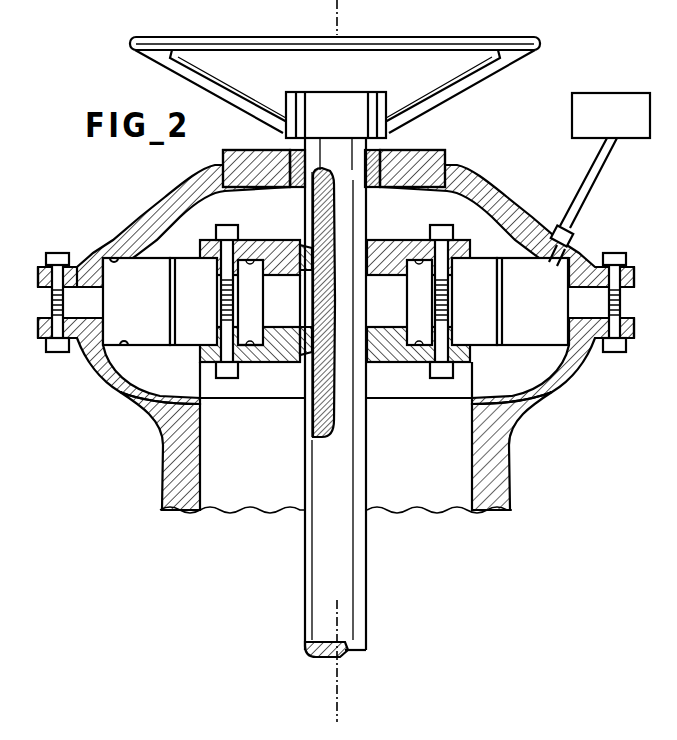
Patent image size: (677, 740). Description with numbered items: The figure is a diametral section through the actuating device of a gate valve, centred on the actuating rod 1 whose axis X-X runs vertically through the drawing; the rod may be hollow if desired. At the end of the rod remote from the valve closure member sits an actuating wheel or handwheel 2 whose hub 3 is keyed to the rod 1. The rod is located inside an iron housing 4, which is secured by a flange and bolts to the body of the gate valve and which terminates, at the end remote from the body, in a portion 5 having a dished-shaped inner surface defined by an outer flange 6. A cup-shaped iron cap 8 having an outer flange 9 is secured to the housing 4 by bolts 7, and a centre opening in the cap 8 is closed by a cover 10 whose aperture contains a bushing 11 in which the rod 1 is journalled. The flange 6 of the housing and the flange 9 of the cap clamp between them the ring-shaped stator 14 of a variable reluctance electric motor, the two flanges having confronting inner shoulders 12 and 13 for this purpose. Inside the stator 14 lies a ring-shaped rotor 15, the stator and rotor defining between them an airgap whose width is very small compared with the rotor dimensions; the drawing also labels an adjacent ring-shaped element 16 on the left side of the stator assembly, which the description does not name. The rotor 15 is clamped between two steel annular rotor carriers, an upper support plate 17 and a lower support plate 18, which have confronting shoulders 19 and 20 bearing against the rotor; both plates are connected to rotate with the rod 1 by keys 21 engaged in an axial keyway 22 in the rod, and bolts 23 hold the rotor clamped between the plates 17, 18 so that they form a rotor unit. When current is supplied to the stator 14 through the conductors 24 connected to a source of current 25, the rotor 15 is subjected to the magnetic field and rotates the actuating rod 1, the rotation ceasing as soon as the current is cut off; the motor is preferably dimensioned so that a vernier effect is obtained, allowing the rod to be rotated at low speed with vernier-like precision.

The actuating rod 1 is at (372, 602).
The handwheel 2 is at (393, 38).
The hub 3 is at (362, 108).
The housing 4 is at (512, 488).
The portion 5 is at (562, 380).
The outer flange 6 is at (78, 340).
The bolts 7 is at (53, 258).
The cap 8 is at (165, 208).
The outer flange 9 is at (73, 269).
The cover 10 is at (425, 150).
The bushing 11 is at (378, 147).
The inner shoulder 12 is at (112, 256).
The inner shoulder 13 is at (130, 348).
The stator 14 is at (527, 325).
The rotor 15 is at (482, 278).
The bearing ring 16 is at (170, 312).
The upper support plate 17 is at (390, 242).
The lower support plate 18 is at (405, 370).
The shoulder 19 is at (253, 262).
The shoulder 20 is at (255, 350).
The keys 21 is at (303, 250).
The keyway 22 is at (320, 207).
The bolts 23 is at (226, 236).
The conductors 24 is at (582, 205).
The source of current 25 is at (628, 105).